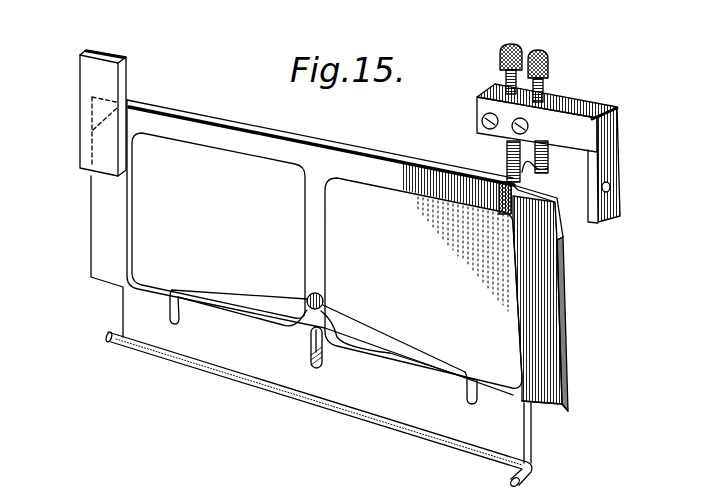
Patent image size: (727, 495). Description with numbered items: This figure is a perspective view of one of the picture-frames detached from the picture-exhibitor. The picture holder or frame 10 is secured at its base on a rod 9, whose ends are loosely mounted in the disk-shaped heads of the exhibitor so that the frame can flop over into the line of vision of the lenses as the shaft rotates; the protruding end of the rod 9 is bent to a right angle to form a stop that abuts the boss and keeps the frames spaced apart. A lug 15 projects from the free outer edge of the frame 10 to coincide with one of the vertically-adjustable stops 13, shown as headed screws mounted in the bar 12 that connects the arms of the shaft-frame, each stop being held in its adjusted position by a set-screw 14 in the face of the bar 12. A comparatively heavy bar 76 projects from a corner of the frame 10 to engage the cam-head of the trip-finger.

The bar 76 is at (97, 75).
The picture holder or frame 10 is at (267, 116).
The rod 9 is at (265, 388).
The bar 12 is at (583, 101).
The set-screws 14 is at (511, 124).
The stops 13 is at (536, 52).
The lug 15 is at (507, 164).